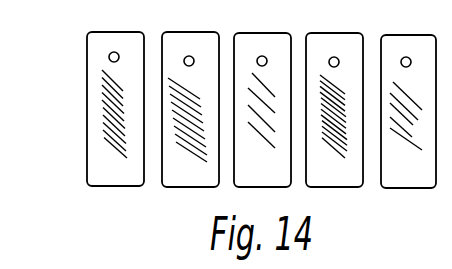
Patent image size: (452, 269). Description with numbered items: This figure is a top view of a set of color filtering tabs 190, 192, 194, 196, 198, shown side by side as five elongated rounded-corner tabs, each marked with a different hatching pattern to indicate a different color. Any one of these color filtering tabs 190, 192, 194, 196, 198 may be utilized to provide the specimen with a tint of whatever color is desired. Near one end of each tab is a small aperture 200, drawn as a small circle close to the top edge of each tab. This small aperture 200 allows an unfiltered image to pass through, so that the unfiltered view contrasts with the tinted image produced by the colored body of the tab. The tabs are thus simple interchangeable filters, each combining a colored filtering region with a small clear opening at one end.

The color filtering tab 190 is at (120, 32).
The color filtering tab 192 is at (202, 32).
The color filtering tab 194 is at (267, 33).
The color filtering tab 196 is at (330, 33).
The color filtering tab 198 is at (403, 35).
The small aperture 200 is at (109, 57).